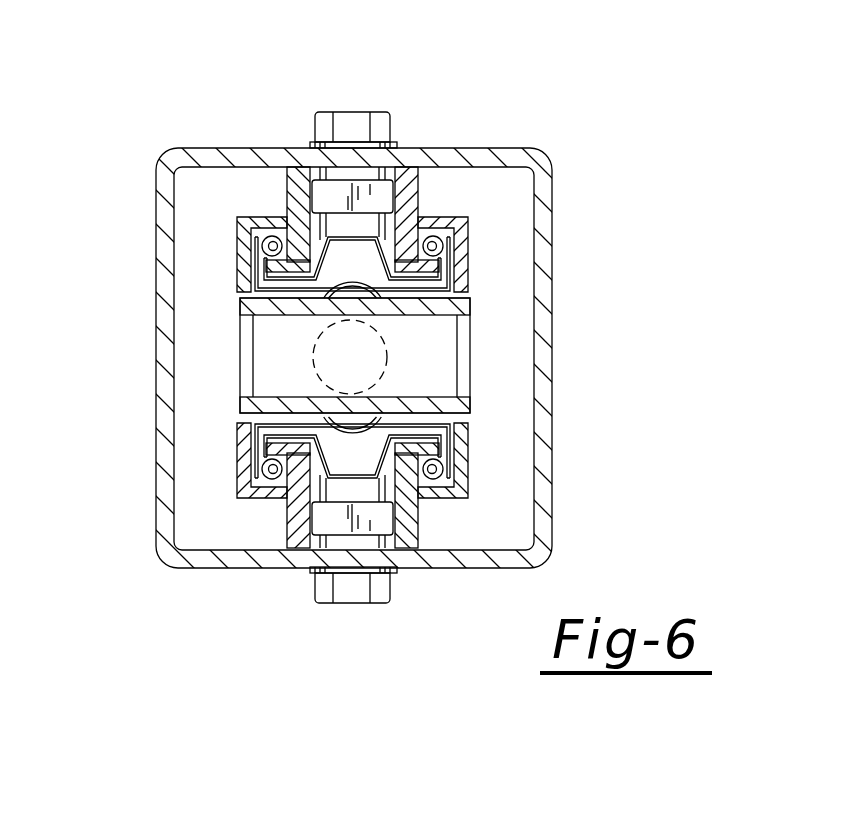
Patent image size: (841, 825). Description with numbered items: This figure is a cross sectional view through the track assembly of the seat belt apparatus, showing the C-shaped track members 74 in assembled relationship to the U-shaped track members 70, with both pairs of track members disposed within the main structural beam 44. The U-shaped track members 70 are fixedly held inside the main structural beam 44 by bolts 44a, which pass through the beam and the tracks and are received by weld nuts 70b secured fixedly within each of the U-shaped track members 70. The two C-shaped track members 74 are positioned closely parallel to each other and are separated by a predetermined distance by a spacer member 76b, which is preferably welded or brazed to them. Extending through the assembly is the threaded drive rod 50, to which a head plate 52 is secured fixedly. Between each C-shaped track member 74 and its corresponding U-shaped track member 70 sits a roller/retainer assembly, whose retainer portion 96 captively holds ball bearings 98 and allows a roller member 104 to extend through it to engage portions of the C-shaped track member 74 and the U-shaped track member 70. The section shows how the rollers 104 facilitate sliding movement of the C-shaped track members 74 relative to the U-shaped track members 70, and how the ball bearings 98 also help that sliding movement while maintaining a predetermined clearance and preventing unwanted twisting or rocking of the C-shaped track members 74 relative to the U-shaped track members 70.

The main structural beam 44 is at (158, 348).
The bolts 44a is at (353, 128).
The threaded drive rod 50 is at (387, 348).
The head plate 52 is at (340, 318).
The U-shaped tracks 70 is at (290, 179).
The weld nuts 70b is at (375, 190).
The C-shaped track members 74 is at (250, 272).
The spacer member 76b is at (432, 385).
The retainer portion 96 is at (445, 283).
The ball bearings 98 is at (268, 243).
The roller member 104 is at (380, 232).